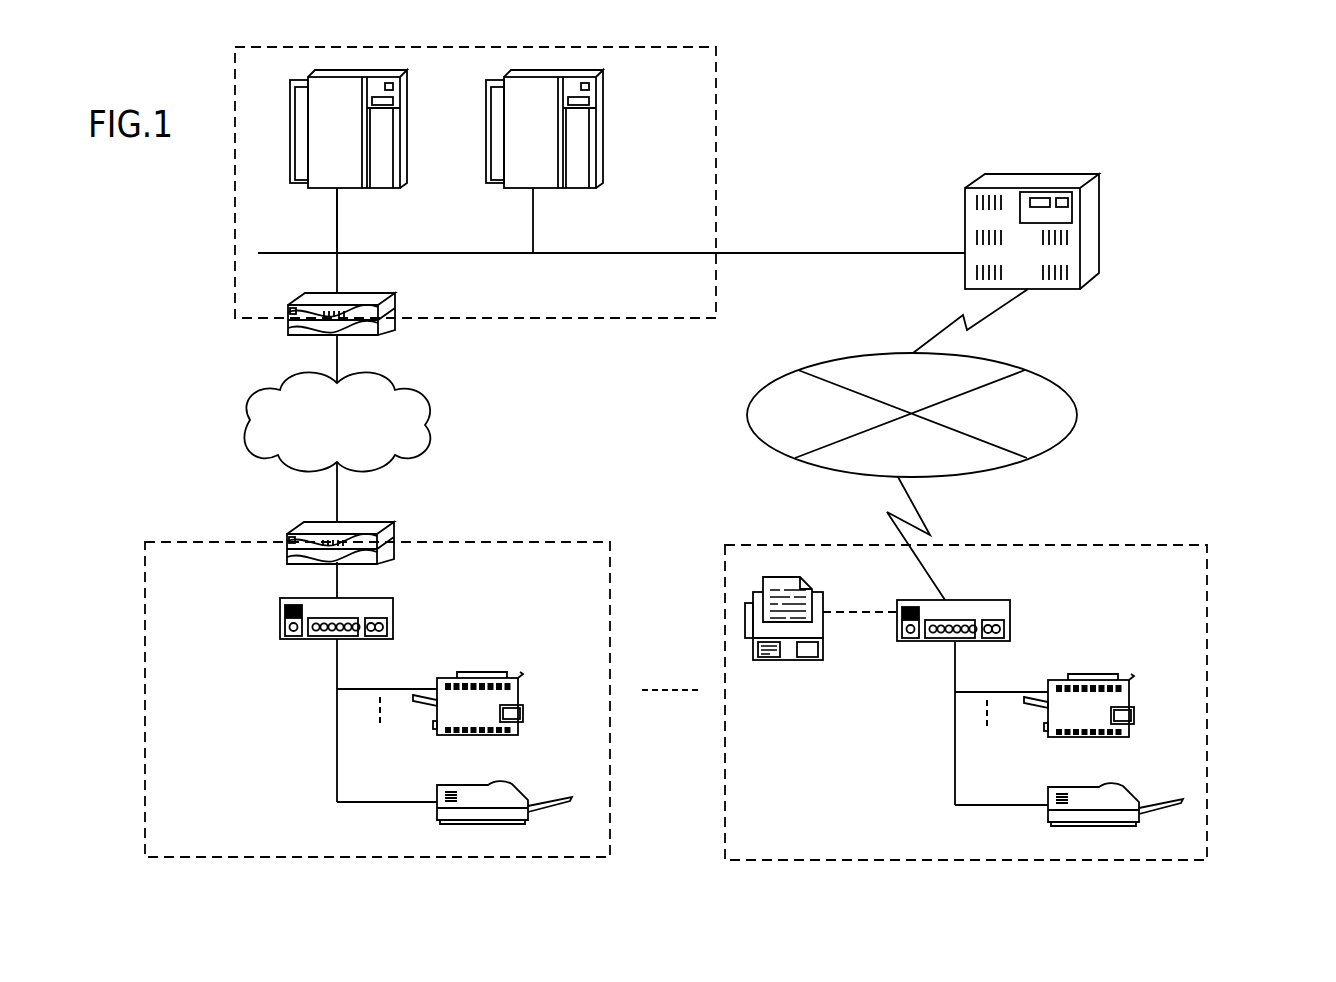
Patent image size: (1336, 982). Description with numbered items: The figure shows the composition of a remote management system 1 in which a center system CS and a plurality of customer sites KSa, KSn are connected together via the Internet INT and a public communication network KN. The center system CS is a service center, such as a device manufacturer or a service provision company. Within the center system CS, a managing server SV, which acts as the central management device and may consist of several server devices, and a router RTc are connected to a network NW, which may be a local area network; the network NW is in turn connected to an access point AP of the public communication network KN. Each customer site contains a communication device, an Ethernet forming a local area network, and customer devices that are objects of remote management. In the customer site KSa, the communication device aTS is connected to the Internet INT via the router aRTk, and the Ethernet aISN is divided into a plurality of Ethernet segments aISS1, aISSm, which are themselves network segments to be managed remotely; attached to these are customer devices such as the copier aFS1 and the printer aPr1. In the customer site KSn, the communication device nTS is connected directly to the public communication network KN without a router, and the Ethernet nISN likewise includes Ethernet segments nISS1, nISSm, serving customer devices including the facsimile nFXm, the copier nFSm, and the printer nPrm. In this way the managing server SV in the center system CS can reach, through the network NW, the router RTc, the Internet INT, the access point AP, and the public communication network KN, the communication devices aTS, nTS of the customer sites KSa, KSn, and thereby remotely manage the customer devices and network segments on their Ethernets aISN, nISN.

The remote management system 1 is at (1010, 121).
The managing server SV is at (408, 108).
The center system CS is at (716, 122).
The router RTc is at (397, 305).
The network NW is at (815, 255).
The access point AP is at (1099, 223).
The Internet INT is at (238, 417).
The public communication network KN is at (1077, 415).
The router aRTk is at (377, 520).
The customer site KSa is at (507, 542).
The customer site KSn is at (1107, 545).
The communication device aTS is at (280, 615).
The Ethernet aISN is at (337, 733).
The Ethernet segment aISS1 is at (383, 689).
The Ethernet segment aISSm is at (385, 802).
The copier aFS1 is at (507, 672).
The printer aPr1 is at (502, 783).
The facsimile nFXm is at (792, 660).
The communication device nTS is at (928, 642).
The Ethernet nISN is at (955, 768).
The Ethernet segment nISS1 is at (985, 692).
The Ethernet segment nISSm is at (997, 805).
The copier nFSm is at (1093, 673).
The printer nPrm is at (1095, 787).